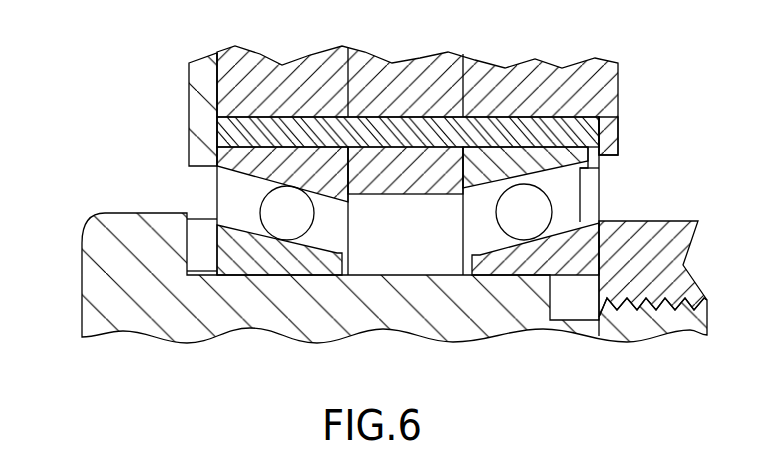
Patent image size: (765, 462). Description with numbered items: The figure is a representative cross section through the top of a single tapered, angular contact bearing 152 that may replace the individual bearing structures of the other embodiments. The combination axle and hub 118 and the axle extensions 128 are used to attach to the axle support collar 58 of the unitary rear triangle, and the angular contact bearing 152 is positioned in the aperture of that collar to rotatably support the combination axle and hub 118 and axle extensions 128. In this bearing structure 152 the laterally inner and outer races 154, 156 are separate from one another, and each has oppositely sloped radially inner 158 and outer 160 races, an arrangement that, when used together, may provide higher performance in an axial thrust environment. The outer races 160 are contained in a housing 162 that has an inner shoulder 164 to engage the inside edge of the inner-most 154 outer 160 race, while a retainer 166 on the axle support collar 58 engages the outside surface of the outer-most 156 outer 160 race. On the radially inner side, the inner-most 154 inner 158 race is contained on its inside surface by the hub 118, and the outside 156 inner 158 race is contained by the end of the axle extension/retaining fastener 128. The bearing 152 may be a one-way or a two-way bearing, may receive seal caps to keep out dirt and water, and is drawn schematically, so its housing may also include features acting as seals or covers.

The axle support collar 58 is at (619, 101).
The combination axle and hub 118 is at (647, 217).
The axle extension 128 is at (93, 262).
The angular contact bearing 152 is at (612, 173).
The laterally inner race 154 is at (599, 196).
The laterally outer race 156 is at (217, 188).
The radially inner race 158 is at (500, 246).
The radially outer race 160 is at (504, 192).
The housing 162 is at (237, 128).
The inner shoulder 164 is at (590, 137).
The retainer 166 is at (189, 89).